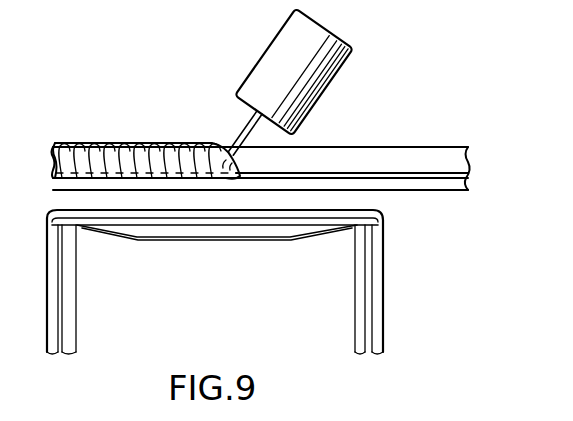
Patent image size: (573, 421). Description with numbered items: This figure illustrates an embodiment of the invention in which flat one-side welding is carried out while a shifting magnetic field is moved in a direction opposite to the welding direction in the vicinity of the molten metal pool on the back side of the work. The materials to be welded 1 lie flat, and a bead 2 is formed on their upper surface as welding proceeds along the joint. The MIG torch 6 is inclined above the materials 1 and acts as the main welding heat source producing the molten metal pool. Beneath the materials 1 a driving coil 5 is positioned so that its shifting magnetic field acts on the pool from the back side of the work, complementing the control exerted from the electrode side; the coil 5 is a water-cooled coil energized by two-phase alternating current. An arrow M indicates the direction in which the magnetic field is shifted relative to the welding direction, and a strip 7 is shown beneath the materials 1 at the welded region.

The materials to be welded 1 is at (421, 148).
The bead 2 is at (122, 150).
The driving coil 5 is at (202, 247).
The MIG torch 6 is at (330, 86).
The backing strip 7 is at (437, 190).
The direction of movement M is at (260, 202).